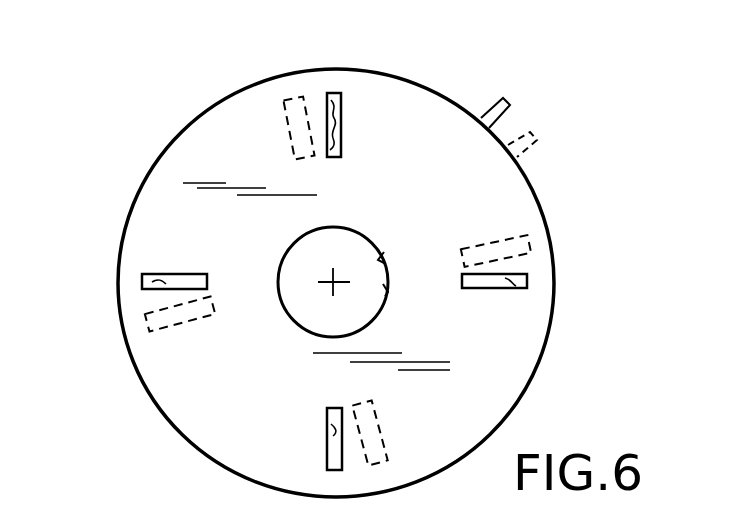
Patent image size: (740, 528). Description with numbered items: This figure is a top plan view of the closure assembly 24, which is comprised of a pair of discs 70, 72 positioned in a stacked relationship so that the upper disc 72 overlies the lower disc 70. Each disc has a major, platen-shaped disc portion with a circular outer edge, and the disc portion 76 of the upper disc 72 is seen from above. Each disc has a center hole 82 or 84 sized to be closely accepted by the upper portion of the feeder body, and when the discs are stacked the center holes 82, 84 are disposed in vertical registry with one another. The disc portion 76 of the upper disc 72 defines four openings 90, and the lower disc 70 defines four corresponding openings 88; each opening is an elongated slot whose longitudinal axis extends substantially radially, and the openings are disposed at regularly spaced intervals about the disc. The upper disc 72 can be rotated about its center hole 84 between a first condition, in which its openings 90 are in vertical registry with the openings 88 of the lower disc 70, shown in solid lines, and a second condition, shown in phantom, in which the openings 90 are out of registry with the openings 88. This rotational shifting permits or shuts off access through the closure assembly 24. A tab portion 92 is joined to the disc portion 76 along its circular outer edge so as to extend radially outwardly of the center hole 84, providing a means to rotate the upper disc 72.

The closure assembly 24 is at (580, 253).
The disc 70 is at (118, 300).
The disc 72 is at (228, 157).
The disc portion 76 is at (417, 92).
The center hole 82 is at (388, 290).
The center hole 84 is at (385, 254).
The openings 88 is at (334, 118).
The openings 90 is at (340, 118).
The tab portion 92 is at (505, 100).